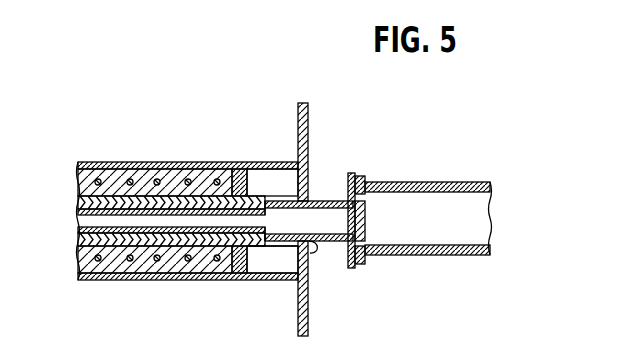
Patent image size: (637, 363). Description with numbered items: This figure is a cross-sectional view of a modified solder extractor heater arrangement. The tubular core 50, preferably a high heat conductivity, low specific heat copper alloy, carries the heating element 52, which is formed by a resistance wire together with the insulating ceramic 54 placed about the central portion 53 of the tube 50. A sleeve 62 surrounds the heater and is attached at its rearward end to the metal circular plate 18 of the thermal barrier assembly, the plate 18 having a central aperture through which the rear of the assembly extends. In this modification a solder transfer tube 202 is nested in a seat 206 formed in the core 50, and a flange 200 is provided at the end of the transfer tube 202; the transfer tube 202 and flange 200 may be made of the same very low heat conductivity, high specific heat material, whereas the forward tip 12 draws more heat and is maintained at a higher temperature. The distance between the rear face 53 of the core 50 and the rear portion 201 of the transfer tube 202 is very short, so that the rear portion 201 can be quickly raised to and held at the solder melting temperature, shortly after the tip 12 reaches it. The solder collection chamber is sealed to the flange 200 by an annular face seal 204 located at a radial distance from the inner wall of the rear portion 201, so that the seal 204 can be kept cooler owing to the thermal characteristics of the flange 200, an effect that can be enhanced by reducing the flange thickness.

The forward tip 12 is at (80, 213).
The circular plate 18 is at (298, 130).
The tube 50 is at (232, 170).
The heating element 52 is at (169, 286).
The central portion 53 is at (272, 278).
The insulating ceramic 54 is at (118, 170).
The sleeve 62 is at (177, 163).
The flange 200 is at (353, 174).
The rear portion 201 is at (357, 213).
The solder transfer tube 202 is at (322, 243).
The face seal 204 is at (356, 262).
The seat 206 is at (283, 202).